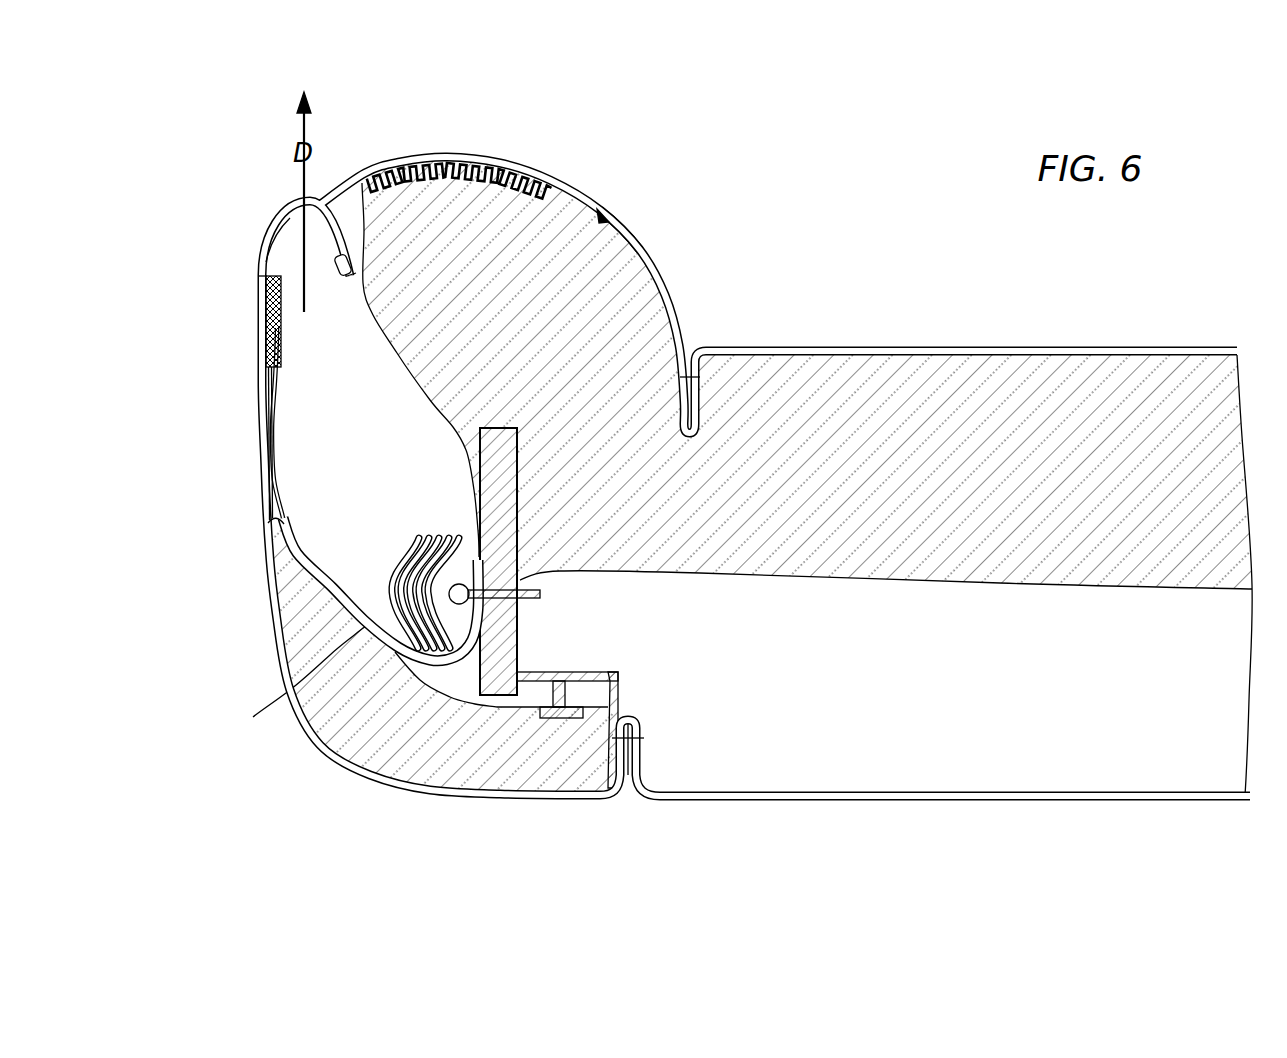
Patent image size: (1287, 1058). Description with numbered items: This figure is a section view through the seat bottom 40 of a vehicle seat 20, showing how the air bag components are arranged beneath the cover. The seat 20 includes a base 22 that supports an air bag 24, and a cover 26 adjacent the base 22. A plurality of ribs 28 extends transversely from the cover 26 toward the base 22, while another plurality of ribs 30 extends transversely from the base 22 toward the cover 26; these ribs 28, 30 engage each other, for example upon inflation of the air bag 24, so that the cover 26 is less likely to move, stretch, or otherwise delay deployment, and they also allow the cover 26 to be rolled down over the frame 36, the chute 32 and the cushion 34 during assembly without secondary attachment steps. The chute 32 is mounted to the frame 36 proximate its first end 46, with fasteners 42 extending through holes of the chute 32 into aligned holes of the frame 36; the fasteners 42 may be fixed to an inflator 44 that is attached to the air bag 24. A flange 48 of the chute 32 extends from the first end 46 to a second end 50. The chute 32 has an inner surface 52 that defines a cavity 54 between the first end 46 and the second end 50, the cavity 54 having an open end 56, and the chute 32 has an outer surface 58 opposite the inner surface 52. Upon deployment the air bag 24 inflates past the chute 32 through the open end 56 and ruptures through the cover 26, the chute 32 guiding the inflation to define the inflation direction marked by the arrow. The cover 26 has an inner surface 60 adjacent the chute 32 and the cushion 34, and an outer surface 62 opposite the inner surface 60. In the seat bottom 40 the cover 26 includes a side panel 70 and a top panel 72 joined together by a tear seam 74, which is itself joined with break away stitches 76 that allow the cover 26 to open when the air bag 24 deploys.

The seat 20 is at (832, 170).
The base 22 is at (582, 197).
The air bag 24 is at (334, 683).
The cover 26 is at (683, 276).
The plurality of ribs 28 is at (353, 172).
The plurality of ribs 30 is at (445, 152).
The chute 32 is at (281, 450).
The cushion 34 is at (613, 262).
The frame 36 is at (487, 700).
The seat bottom 40 is at (817, 287).
The fastener 42 is at (527, 602).
The inflator 44 is at (416, 548).
The first end 46 is at (478, 552).
The flange 48 is at (288, 548).
The second end 50 is at (279, 258).
The inner surface 52 is at (308, 565).
The cavity 54 is at (383, 545).
The open end 56 is at (293, 256).
The outer surface 58 is at (263, 420).
The inner surface 60 is at (604, 212).
The outer surface 62 is at (532, 166).
The side panel 70 is at (259, 318).
The top panel 72 is at (669, 247).
The tear seam 74 is at (324, 186).
The break away stitch 76 is at (340, 277).